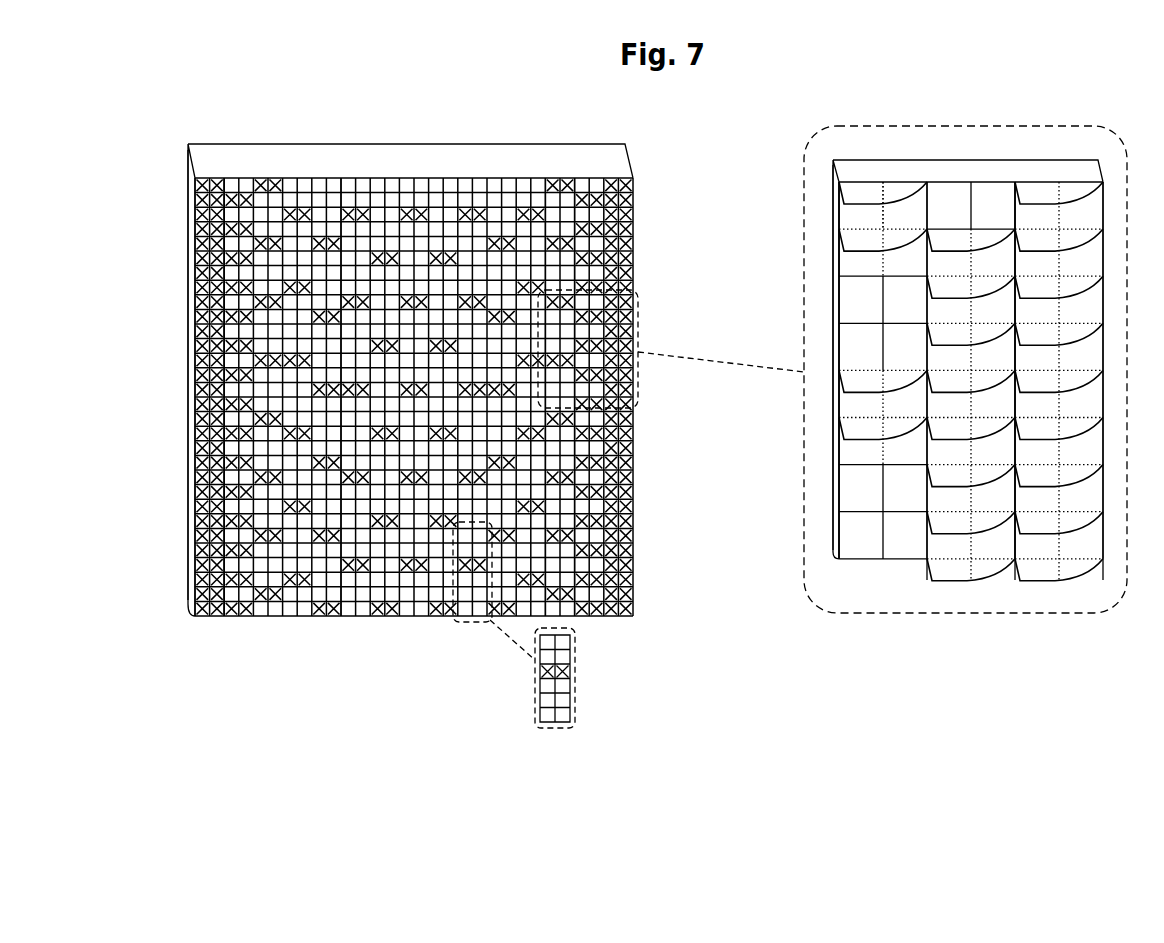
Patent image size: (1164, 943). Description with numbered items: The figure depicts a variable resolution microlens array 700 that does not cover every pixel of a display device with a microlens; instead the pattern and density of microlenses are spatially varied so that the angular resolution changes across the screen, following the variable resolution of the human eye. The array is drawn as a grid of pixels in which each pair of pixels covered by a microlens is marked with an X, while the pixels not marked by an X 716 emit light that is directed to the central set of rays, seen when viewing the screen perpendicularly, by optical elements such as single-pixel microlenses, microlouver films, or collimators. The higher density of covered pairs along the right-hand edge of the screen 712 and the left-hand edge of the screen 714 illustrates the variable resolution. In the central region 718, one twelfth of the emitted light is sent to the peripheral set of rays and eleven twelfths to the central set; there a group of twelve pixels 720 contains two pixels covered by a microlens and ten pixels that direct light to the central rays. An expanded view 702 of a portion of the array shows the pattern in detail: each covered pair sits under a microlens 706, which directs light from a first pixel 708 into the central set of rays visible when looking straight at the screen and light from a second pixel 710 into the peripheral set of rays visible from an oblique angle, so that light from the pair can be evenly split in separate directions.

The variable resolution microlens array 700 is at (397, 392).
The expanded view 702 is at (937, 348).
The microlens 706 is at (843, 222).
The first pixel 708 is at (877, 202).
The second pixel 710 is at (920, 227).
The right-hand edge of the screen 712 is at (633, 465).
The left-hand edge of the screen 714 is at (193, 365).
The pixels not marked by an X 716 is at (348, 184).
The central region 718 is at (488, 617).
The group of twelve pixels 720 is at (572, 682).